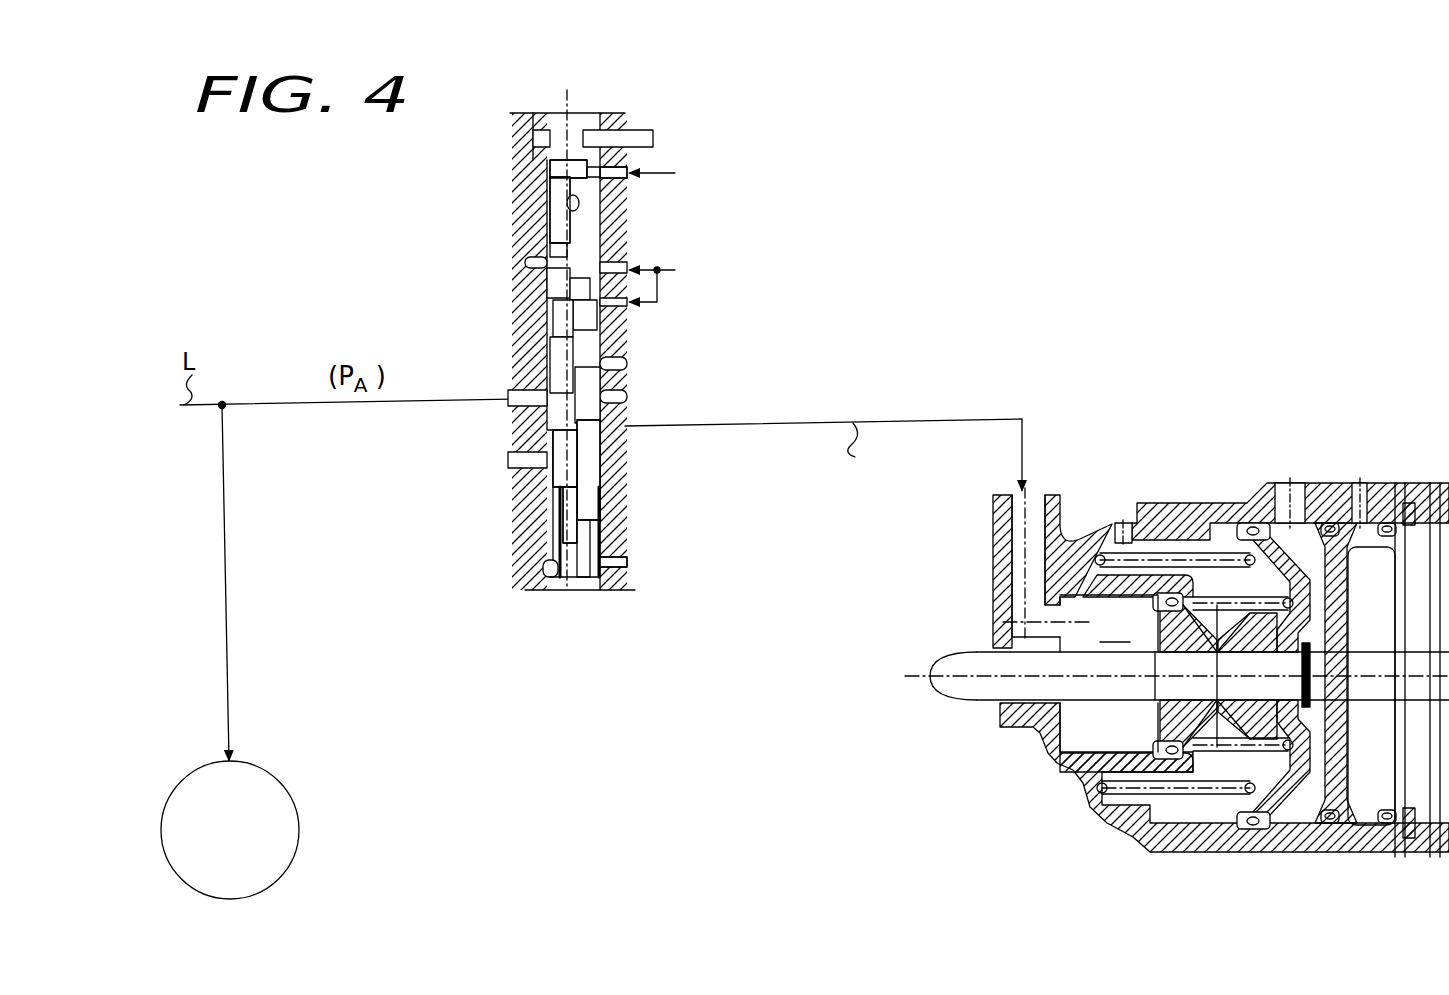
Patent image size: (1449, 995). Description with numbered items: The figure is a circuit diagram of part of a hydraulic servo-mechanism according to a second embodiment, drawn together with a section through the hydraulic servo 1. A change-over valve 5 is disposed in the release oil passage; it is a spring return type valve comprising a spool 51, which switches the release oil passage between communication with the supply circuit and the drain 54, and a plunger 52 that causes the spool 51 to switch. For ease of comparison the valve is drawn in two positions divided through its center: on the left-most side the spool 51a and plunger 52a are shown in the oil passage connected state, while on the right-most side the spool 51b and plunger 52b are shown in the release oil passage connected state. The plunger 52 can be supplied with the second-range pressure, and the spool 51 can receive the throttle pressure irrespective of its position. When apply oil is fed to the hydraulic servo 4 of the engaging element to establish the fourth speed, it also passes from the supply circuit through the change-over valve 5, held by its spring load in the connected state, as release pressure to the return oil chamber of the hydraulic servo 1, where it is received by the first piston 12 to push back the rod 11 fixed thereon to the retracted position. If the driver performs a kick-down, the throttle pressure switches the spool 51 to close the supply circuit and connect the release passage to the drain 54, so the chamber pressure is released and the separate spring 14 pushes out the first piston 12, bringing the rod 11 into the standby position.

The hydraulic servo 1 is at (1177, 647).
The hydraulic servo 4 is at (300, 826).
The change-over valve 5 is at (602, 113).
The rod 11 is at (969, 703).
The first piston 12 is at (1157, 708).
The separate spring 14 is at (1247, 619).
The spool 51 is at (600, 462).
The spool 51a is at (562, 462).
The spool 51b is at (598, 510).
The plunger 52 is at (540, 203).
The plunger 52a is at (545, 212).
The plunger 52b is at (618, 240).
The drain 54 is at (628, 583).